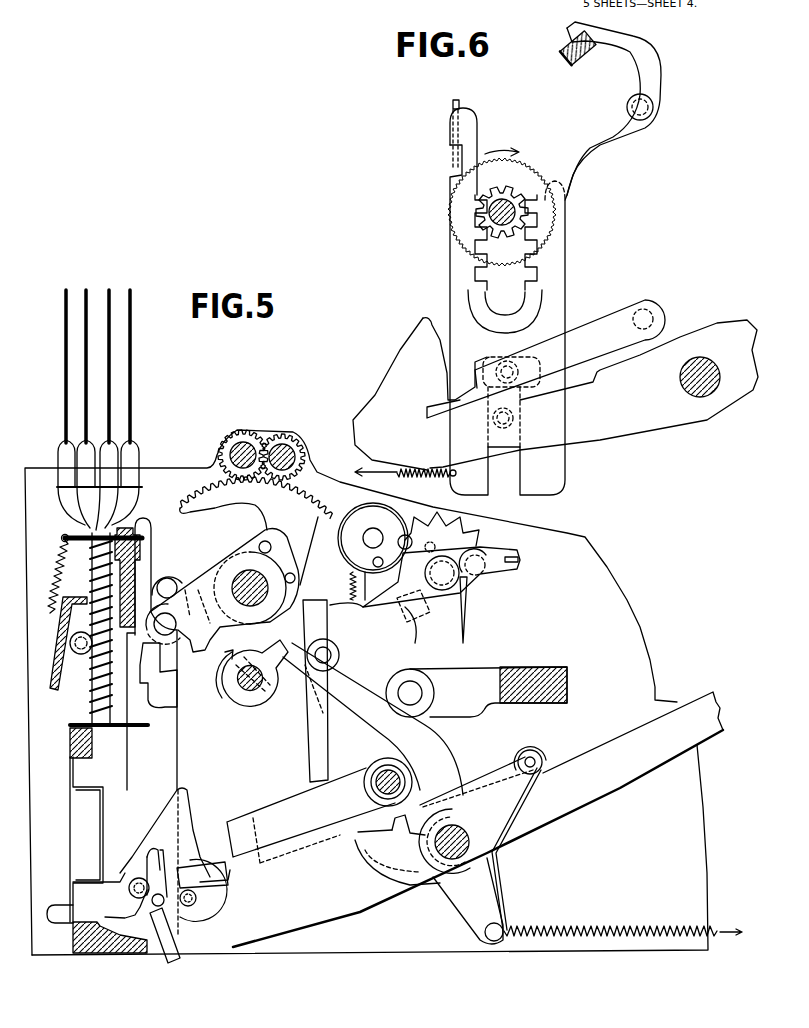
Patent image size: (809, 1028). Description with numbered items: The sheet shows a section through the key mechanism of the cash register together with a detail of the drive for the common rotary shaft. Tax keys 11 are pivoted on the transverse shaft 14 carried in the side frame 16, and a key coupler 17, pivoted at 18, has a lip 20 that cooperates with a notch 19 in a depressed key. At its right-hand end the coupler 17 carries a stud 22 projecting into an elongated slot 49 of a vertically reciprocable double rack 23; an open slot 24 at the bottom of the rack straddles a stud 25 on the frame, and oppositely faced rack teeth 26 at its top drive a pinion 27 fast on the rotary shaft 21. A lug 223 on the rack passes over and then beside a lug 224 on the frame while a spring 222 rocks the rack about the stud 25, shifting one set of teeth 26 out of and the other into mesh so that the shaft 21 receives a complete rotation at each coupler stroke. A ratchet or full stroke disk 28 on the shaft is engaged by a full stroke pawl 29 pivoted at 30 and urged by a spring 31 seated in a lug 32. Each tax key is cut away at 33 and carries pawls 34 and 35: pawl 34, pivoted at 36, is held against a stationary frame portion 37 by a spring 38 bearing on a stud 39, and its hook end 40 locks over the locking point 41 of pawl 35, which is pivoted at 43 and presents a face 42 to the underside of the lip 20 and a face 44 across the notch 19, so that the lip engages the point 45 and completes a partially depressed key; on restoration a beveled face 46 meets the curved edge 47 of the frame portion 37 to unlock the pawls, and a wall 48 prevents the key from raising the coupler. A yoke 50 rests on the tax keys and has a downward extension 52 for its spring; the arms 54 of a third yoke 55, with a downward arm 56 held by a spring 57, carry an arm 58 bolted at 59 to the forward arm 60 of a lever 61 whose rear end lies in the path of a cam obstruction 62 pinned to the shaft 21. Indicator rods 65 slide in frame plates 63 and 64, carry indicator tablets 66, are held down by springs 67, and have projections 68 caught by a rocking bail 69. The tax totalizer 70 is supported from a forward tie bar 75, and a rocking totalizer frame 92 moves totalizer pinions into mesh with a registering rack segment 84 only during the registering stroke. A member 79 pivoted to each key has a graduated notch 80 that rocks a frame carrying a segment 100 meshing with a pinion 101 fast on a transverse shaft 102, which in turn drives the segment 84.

In FIG. 5, the tax keys 11 is at (715, 728).
In FIG. 5, the transverse shaft 14 is at (470, 852).
In FIG. 5, the side frame 16 is at (603, 582).
In FIG. 6, the key coupler 17 is at (585, 327).
In FIG. 5, the key coupler 17 is at (290, 803).
In FIG. 6, the pivot 18 is at (650, 313).
In FIG. 5, the pivot 18 is at (385, 770).
In FIG. 5, the notch 19 is at (180, 873).
In FIG. 5, the lip 20 is at (220, 850).
In FIG. 6, the rotary shaft 21 is at (520, 187).
In FIG. 5, the rotary shaft 21 is at (250, 693).
In FIG. 6, the stud 22 is at (503, 366).
In FIG. 6, the double rack 23 is at (564, 266).
In FIG. 6, the open slot 24 is at (516, 478).
In FIG. 6, the stud 25 is at (514, 430).
In FIG. 6, the rack teeth 26 is at (527, 298).
In FIG. 6, the pinion 27 is at (495, 190).
In FIG. 6, the ratchet or full stroke disk 28 is at (462, 227).
In FIG. 6, the full stroke pawl 29 is at (657, 73).
In FIG. 6, the pivot 30 is at (653, 107).
In FIG. 6, the spring 31 is at (596, 40).
In FIG. 6, the lug 32 is at (566, 54).
In FIG. 5, the cut away portion 33 is at (300, 930).
In FIG. 5, the pawl 34 is at (168, 963).
In FIG. 5, the pawl 35 is at (213, 907).
In FIG. 5, the pivot 36 is at (130, 891).
In FIG. 5, the stationary frame portion 37 is at (110, 957).
In FIG. 5, the spring 38 is at (177, 958).
In FIG. 5, the stud 39 is at (190, 930).
In FIG. 5, the hook end 40 is at (150, 856).
In FIG. 5, the locking point 41 is at (163, 855).
In FIG. 5, the face 42 is at (213, 882).
In FIG. 5, the pivot 43 is at (193, 905).
In FIG. 5, the face 44 is at (172, 868).
In FIG. 5, the point 45 is at (200, 867).
In FIG. 5, the beveled rear face 46 is at (158, 963).
In FIG. 5, the curved forward edge 47 is at (140, 952).
In FIG. 5, the wall 48 is at (207, 897).
In FIG. 6, the elongated slot 49 is at (540, 373).
In FIG. 5, the yoke 50 is at (367, 868).
In FIG. 5, the downward extension 52 is at (505, 920).
In FIG. 5, the arm 54 is at (393, 867).
In FIG. 5, the third yoke 55 is at (413, 818).
In FIG. 5, the downwardly extending arm 56 is at (490, 900).
In FIG. 5, the spring 57 is at (623, 922).
In FIG. 5, the arm 58 is at (520, 810).
In FIG. 5, the bolt 59 is at (536, 756).
In FIG. 5, the forward arm 60 is at (517, 797).
In FIG. 5, the lever 61 is at (443, 767).
In FIG. 5, the obstruction 62 is at (266, 648).
In FIG. 5, the frame plate 63 is at (68, 535).
In FIG. 5, the frame plate 64 is at (70, 740).
In FIG. 5, the indicator rod 65 is at (88, 680).
In FIG. 5, the indicator tablet 66 is at (130, 290).
In FIG. 5, the spring 67 is at (92, 560).
In FIG. 5, the projection 68 is at (87, 707).
In FIG. 5, the rocking bail 69 is at (83, 600).
In FIG. 5, the tax totalizer 70 is at (72, 645).
In FIG. 5, the forward tie bar 75 is at (567, 683).
In FIG. 5, the member 79 is at (163, 742).
In FIG. 5, the notch 80 is at (160, 668).
In FIG. 5, the registering rack segment 84 is at (340, 527).
In FIG. 5, the rocking totalizer frame 92 is at (210, 582).
In FIG. 5, the segment 100 is at (318, 520).
In FIG. 5, the pinion 101 is at (266, 445).
In FIG. 5, the transverse shaft 102 is at (250, 447).
In FIG. 6, the spring 222 is at (410, 470).
In FIG. 6, the lug 223 is at (480, 157).
In FIG. 6, the lug 224 is at (453, 104).